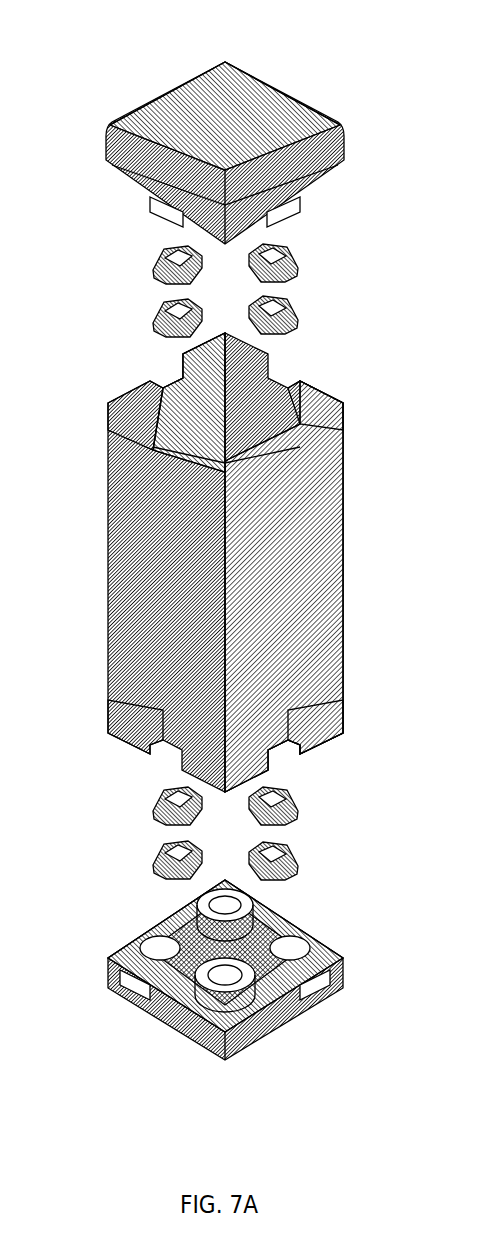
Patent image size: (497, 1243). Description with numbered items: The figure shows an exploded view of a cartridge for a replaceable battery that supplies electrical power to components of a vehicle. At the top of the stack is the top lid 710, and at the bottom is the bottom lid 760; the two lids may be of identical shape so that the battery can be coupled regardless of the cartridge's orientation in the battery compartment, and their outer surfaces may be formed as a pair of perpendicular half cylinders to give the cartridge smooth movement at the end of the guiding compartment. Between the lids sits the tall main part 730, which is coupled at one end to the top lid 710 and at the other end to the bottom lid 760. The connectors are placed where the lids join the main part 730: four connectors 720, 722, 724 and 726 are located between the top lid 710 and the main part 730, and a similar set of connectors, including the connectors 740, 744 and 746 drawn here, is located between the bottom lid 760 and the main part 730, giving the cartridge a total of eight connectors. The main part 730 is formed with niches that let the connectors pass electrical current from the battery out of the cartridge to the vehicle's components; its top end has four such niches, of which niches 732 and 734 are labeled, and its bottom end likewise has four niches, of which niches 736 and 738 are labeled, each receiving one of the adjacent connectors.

The top lid 710 is at (260, 95).
The connector 720 is at (282, 250).
The connector 722 is at (282, 312).
The connector 724 is at (155, 263).
The connector 726 is at (155, 325).
The main part 730 is at (232, 567).
The niche 732 is at (285, 388).
The niche 734 is at (168, 383).
The niche 736 is at (280, 747).
The niche 738 is at (168, 745).
The connector 740 is at (290, 855).
The connector 744 is at (170, 810).
The connector 746 is at (290, 797).
The bottom lid 760 is at (323, 1002).